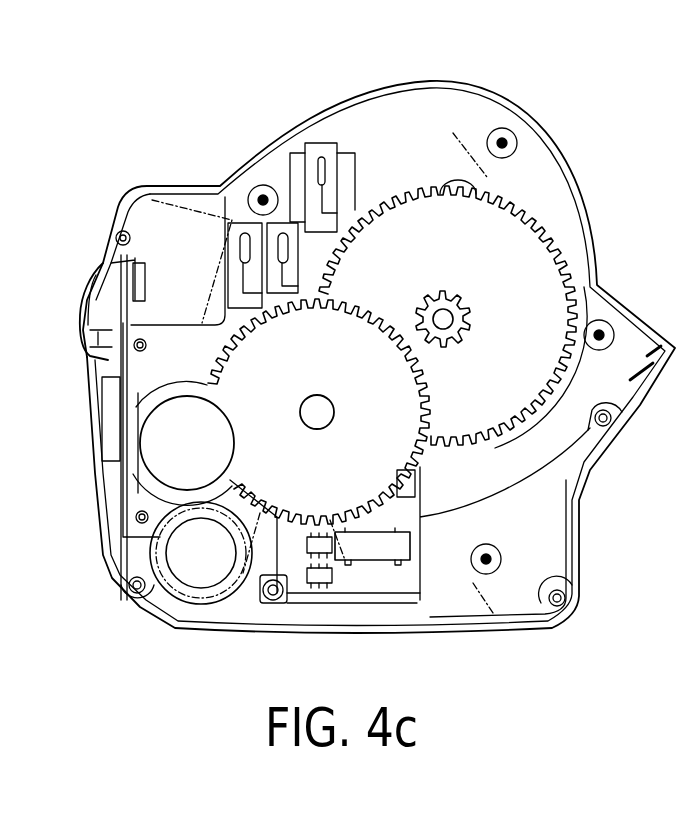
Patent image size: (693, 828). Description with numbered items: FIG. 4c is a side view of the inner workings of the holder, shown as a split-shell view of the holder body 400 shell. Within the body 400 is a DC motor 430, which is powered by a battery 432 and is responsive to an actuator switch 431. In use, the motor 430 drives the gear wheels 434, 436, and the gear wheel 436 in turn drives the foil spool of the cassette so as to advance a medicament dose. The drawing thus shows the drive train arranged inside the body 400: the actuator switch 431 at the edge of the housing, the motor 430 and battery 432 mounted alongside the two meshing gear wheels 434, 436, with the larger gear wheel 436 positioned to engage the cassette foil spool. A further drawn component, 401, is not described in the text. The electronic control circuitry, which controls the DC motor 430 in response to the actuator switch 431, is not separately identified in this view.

The holder body 400 is at (411, 143).
The actuator switch 431 is at (85, 295).
The gear wheel 436 is at (522, 262).
The gear wheel 434 is at (398, 409).
The DC motor 430 is at (148, 473).
The battery 432 is at (195, 573).
The circuit board 401 is at (382, 550).